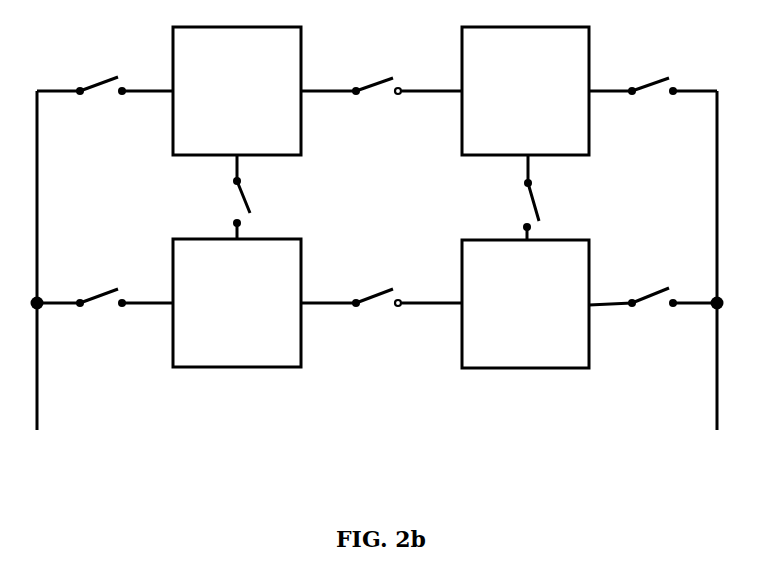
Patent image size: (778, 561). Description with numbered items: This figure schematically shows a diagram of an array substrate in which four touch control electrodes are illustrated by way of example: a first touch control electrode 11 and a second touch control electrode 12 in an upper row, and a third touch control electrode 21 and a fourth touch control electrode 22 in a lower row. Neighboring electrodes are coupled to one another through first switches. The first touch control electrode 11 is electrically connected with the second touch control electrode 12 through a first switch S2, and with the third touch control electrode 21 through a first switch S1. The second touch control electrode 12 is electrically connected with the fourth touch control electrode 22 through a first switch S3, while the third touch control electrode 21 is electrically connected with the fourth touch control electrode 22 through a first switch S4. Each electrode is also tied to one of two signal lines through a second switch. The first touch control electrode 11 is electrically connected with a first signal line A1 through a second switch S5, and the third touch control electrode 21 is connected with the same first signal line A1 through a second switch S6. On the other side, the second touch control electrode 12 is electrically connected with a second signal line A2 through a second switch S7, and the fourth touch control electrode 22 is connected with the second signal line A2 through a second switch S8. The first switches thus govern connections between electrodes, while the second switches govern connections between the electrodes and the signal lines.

The first touch control electrode 11 is at (237, 91).
The second touch control electrode 12 is at (525, 91).
The third touch control electrode 21 is at (237, 303).
The fourth touch control electrode 22 is at (525, 304).
The first switch S1 is at (255, 197).
The first switch S2 is at (376, 72).
The first switch S3 is at (551, 197).
The first switch S4 is at (376, 284).
The second switch S5 is at (101, 73).
The second switch S6 is at (101, 285).
The second switch S7 is at (652, 73).
The second switch S8 is at (652, 286).
The first signal line A1 is at (37, 282).
The second signal line A2 is at (710, 289).